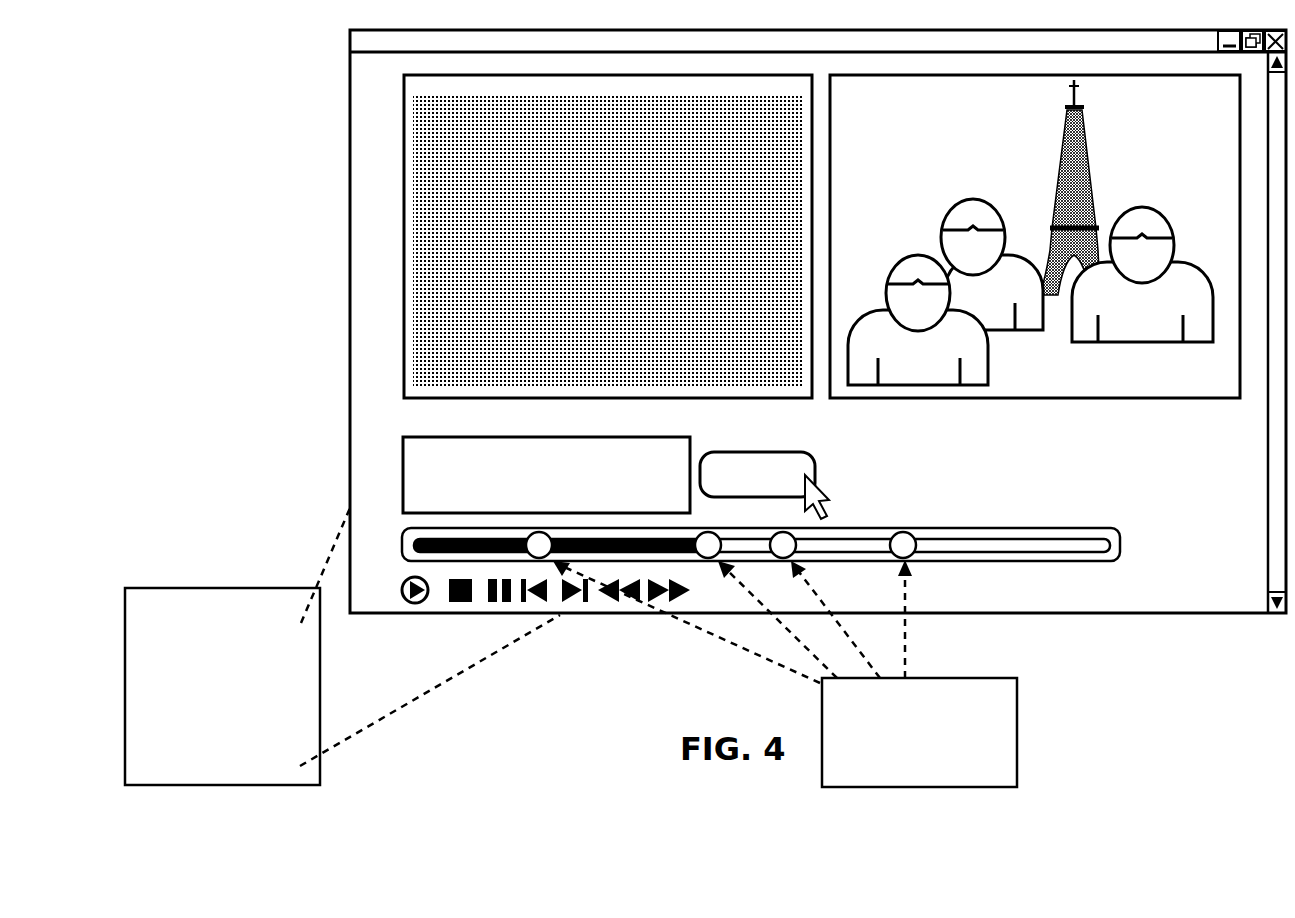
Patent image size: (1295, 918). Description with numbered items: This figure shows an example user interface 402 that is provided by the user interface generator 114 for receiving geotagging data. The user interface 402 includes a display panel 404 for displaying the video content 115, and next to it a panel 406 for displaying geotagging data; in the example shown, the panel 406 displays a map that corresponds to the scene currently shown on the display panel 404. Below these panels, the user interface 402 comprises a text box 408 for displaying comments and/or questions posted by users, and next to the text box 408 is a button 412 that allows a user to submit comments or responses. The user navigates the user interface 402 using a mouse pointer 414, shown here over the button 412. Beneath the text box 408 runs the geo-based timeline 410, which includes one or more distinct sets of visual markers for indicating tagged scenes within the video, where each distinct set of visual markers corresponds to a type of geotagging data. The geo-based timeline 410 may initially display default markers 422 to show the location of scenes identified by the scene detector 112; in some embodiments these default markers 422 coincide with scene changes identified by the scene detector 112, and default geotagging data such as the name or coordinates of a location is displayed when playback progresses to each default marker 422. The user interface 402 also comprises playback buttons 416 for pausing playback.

The user interface 402 is at (574, 29).
The display panel 404 is at (1035, 262).
The panel 406 is at (404, 170).
The text box 408 is at (403, 460).
The geo-based timeline 410 is at (1047, 562).
The button 412 is at (808, 453).
The mouse pointer 414 is at (822, 491).
The playback buttons 416 is at (484, 613).
The default markers 422 is at (913, 528).
The video content 115 is at (950, 130).
The user interface generator 114 is at (206, 720).
The scene detector 112 is at (902, 765).